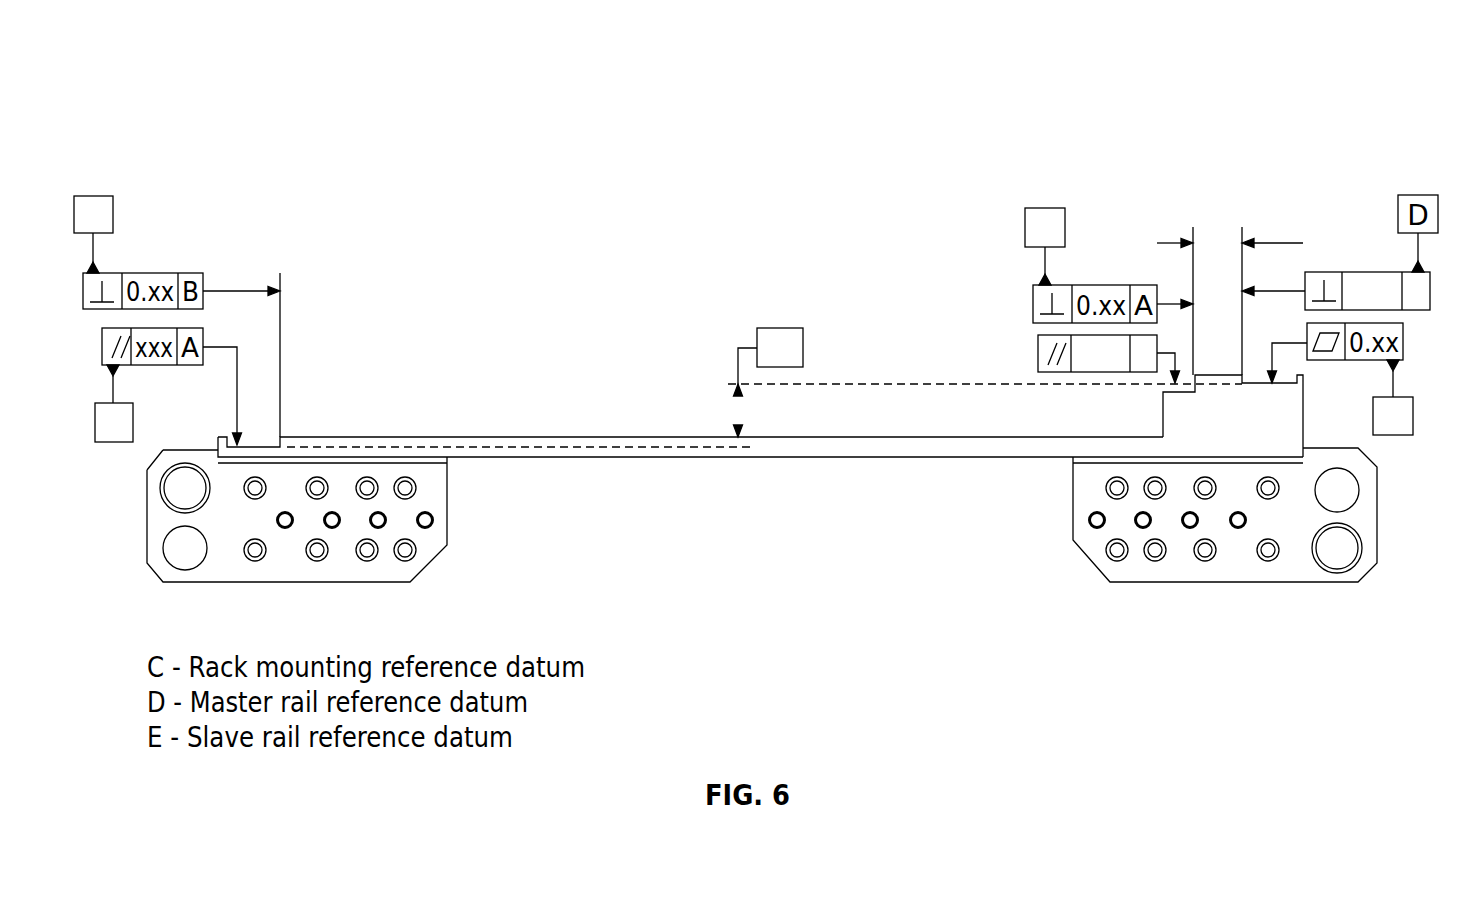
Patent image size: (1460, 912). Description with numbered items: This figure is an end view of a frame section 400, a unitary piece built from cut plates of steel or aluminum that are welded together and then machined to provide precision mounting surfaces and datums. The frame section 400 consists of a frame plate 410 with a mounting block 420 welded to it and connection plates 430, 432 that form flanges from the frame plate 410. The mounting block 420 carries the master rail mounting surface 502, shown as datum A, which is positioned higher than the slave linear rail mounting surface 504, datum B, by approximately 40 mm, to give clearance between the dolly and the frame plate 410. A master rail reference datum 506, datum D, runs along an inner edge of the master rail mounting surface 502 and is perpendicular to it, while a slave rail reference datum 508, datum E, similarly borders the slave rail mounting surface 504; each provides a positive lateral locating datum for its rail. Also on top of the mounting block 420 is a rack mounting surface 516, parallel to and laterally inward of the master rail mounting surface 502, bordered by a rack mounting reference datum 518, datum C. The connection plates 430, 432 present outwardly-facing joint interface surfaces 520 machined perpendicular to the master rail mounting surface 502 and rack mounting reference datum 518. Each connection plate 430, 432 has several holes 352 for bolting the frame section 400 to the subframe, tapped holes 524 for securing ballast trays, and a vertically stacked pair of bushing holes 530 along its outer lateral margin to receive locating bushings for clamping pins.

The frame section 400 is at (1312, 61).
The frame plate 410 is at (597, 437).
The mounting block 420 is at (1177, 425).
The connection plate 430 is at (155, 570).
The connection plate 432 is at (1368, 568).
The holes 352 is at (367, 477).
The tapped holes 524 is at (433, 521).
The bushing holes 530 is at (163, 547).
The joint interface surfaces 520 is at (240, 518).
The master rail mounting surface 502 is at (1393, 435).
The slave linear rail mounting surface 504 is at (133, 422).
The master rail reference datum 506 is at (1398, 212).
The slave rail reference datum 508 is at (113, 213).
The rack mounting surface 516 is at (1038, 353).
The rack mounting reference datum 518 is at (1025, 227).
The height offset 40 is at (769, 382).